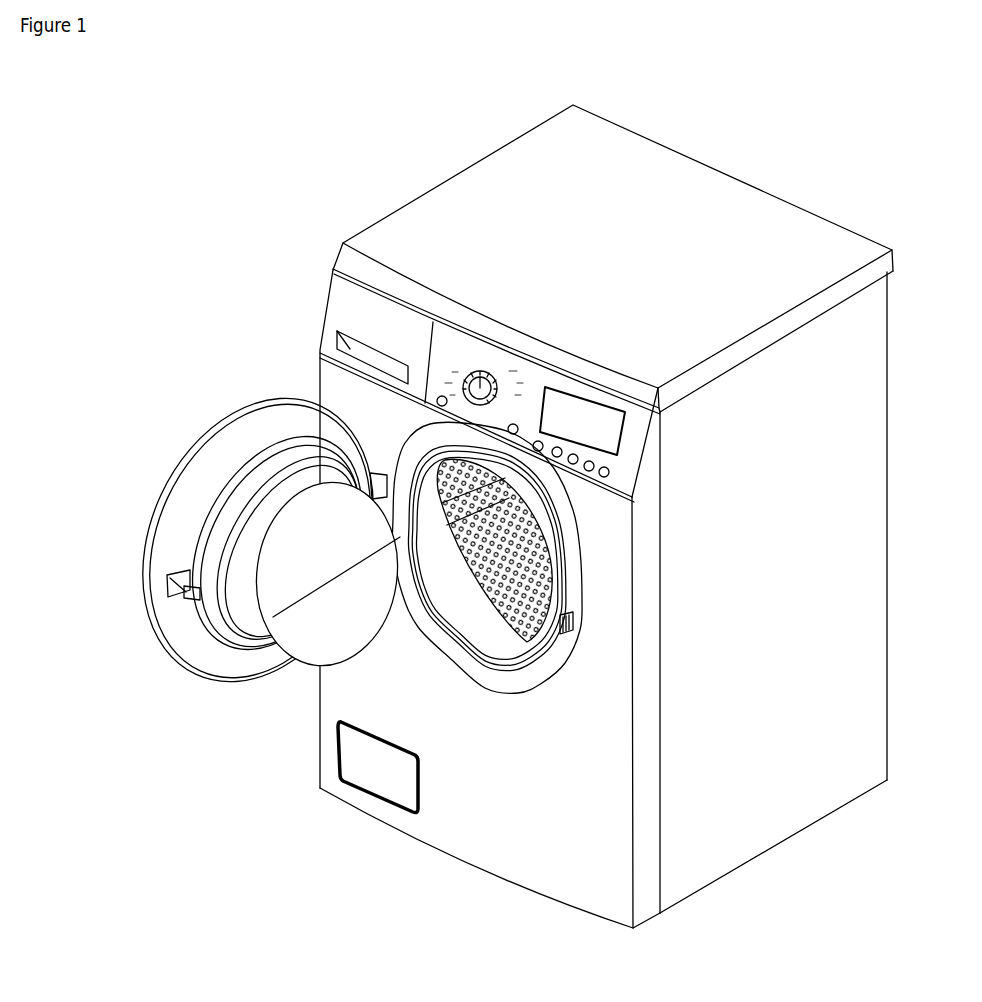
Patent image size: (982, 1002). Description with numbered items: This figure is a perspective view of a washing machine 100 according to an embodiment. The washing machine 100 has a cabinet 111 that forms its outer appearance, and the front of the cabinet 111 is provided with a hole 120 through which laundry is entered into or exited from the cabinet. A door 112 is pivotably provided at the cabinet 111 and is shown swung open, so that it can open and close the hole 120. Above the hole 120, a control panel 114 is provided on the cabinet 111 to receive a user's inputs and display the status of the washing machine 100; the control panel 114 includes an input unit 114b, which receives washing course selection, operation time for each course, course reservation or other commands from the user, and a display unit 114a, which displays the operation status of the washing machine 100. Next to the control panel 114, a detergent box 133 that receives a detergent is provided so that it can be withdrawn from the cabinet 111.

The washing machine 100 is at (398, 163).
The cabinet 111 is at (778, 806).
The door 112 is at (181, 474).
The control panel 114 is at (648, 456).
The display unit 114a is at (581, 423).
The input unit 114b is at (483, 383).
The hole 120 is at (513, 564).
The detergent box 133 is at (350, 317).